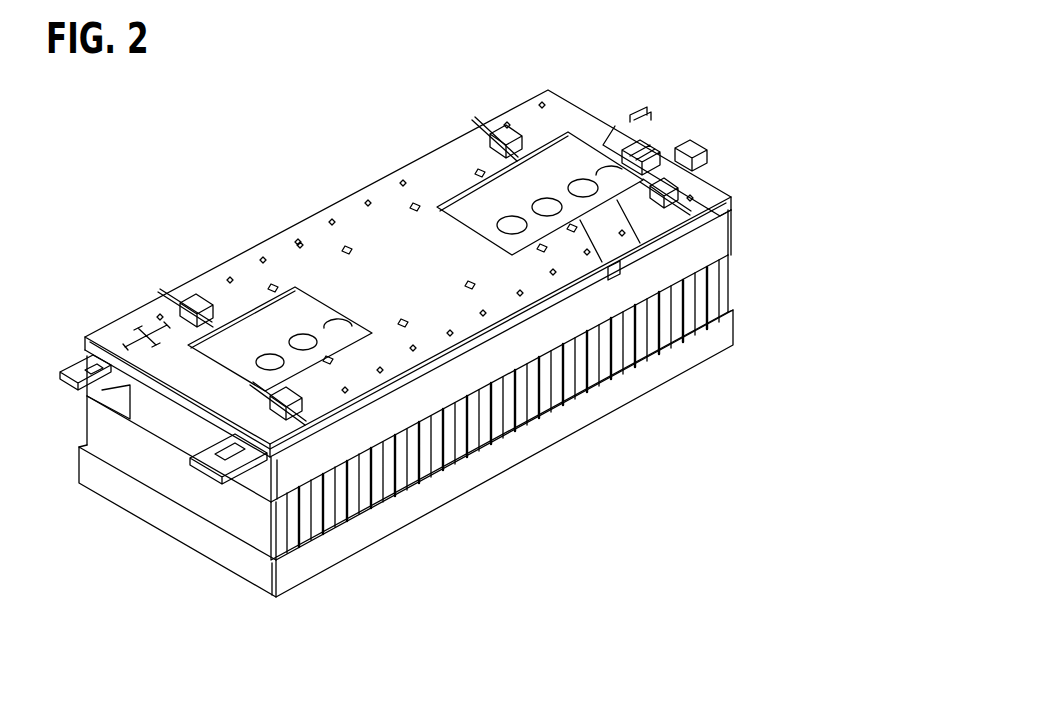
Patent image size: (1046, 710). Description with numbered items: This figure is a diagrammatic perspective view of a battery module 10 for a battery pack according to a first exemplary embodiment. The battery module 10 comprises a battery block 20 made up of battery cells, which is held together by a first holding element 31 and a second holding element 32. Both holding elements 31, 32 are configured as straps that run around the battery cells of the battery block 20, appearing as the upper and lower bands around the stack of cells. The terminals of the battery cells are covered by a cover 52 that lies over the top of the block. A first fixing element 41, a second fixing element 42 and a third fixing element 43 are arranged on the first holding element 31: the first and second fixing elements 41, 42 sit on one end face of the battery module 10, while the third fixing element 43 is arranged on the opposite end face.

The battery module 10 is at (201, 229).
The battery block 20 is at (598, 368).
The first holding element 31 is at (722, 240).
The second holding element 32 is at (710, 338).
The first fixing element 41 is at (72, 363).
The second fixing element 42 is at (213, 443).
The third fixing element 43 is at (660, 128).
The cover 52 is at (346, 198).